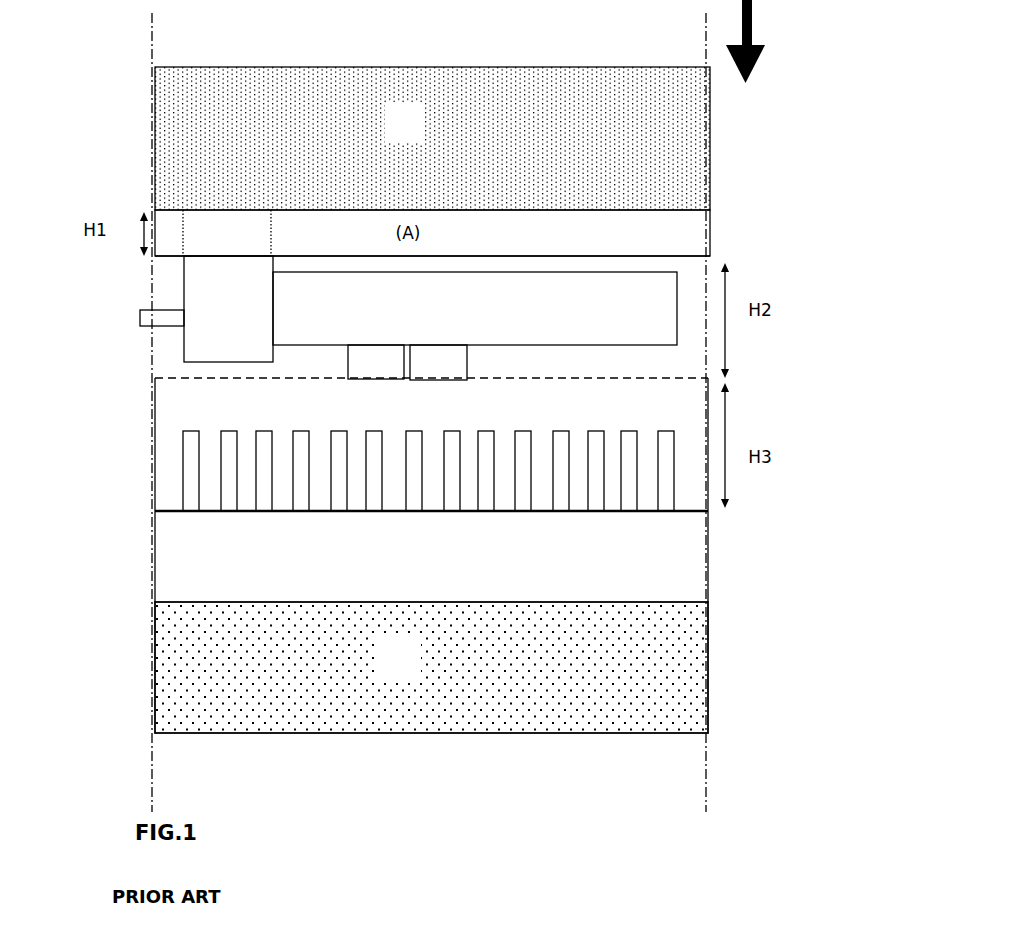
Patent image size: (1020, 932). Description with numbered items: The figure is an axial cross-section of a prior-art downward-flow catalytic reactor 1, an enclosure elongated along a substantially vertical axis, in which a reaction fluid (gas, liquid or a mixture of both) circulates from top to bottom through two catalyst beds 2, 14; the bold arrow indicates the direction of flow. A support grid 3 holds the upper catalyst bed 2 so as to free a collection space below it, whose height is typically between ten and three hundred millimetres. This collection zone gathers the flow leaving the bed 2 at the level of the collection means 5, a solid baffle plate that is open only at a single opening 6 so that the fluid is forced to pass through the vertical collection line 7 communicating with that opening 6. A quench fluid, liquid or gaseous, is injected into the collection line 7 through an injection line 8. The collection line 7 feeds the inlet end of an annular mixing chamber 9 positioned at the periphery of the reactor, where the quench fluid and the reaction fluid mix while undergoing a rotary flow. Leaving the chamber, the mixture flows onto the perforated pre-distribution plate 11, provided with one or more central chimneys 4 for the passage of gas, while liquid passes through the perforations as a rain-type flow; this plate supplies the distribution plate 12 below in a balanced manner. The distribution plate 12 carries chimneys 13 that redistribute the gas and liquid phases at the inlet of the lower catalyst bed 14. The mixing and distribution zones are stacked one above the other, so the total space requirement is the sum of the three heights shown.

The reactor 1 is at (152, 450).
The catalyst bed 2 is at (398, 132).
The support grid 3 is at (682, 208).
The central chimney 4 is at (440, 362).
The collection means 5 is at (600, 258).
The opening 6 is at (217, 255).
The collection line 7 is at (207, 289).
The injection line 8 is at (165, 320).
The annular mixing chamber 9 is at (540, 282).
The pre-distribution plate 11 is at (152, 378).
The distribution plate 12 is at (548, 512).
The chimneys 13 is at (458, 495).
The catalyst bed 14 is at (386, 669).